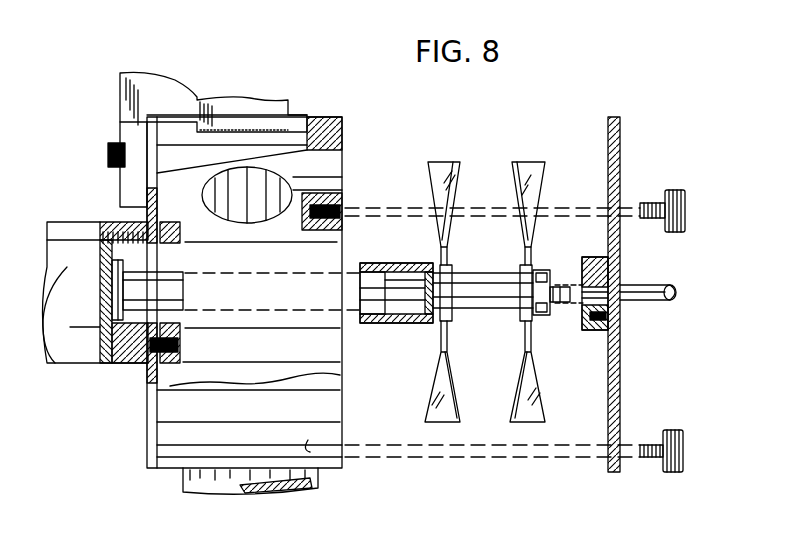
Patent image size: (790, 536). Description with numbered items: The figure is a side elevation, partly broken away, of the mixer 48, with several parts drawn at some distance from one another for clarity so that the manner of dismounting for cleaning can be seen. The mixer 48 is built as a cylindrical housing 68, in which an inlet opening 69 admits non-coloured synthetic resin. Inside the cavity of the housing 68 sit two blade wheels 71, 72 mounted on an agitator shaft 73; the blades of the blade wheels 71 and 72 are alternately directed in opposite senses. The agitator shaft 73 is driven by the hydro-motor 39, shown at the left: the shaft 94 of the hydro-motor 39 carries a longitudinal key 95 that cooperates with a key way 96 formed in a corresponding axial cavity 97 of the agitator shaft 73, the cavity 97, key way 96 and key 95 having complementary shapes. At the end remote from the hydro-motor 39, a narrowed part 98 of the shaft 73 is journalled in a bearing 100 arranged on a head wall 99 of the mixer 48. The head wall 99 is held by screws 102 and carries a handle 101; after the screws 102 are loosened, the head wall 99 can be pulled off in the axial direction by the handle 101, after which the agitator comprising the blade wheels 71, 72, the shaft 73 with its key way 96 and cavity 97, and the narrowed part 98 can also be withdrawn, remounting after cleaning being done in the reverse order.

The hydro-motor 39 is at (73, 343).
The mixer 48 is at (342, 162).
The cylindrical housing 68 is at (150, 410).
The inlet opening 69 is at (342, 178).
The blade wheel 71 is at (446, 162).
The blade wheel 72 is at (530, 175).
The agitator shaft 73 is at (490, 283).
The shaft 94 is at (147, 295).
The longitudinal key 95 is at (98, 267).
The key way 96 is at (383, 273).
The axial cavity 97 is at (398, 287).
The narrowed part 98 is at (563, 287).
The head wall 99 is at (613, 150).
The bearing 100 is at (612, 312).
The handle 101 is at (652, 285).
The screws 102 is at (687, 207).